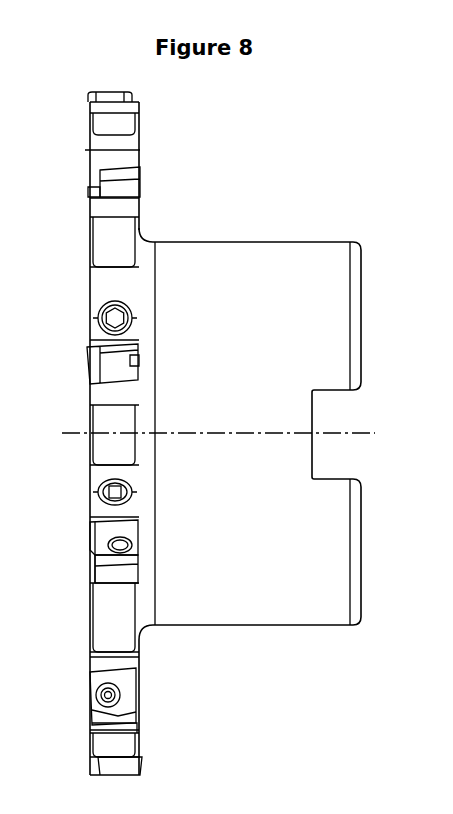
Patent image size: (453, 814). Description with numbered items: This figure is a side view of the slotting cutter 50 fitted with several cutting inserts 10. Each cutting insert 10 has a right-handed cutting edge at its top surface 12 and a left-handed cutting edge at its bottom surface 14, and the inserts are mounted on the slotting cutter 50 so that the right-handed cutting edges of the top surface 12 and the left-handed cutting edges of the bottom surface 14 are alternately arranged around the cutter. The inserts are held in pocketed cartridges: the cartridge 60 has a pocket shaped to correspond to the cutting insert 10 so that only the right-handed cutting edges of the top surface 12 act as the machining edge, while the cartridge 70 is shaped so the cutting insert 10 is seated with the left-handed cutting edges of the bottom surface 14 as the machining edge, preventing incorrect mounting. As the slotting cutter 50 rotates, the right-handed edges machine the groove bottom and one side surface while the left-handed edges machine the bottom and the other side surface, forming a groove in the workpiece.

The cutting insert 10 is at (143, 361).
The top surface 12 is at (97, 342).
The bottom surface 14 is at (102, 539).
The slotting cutter 50 is at (267, 195).
The cartridge 60 is at (143, 387).
The cartridge 70 is at (143, 590).